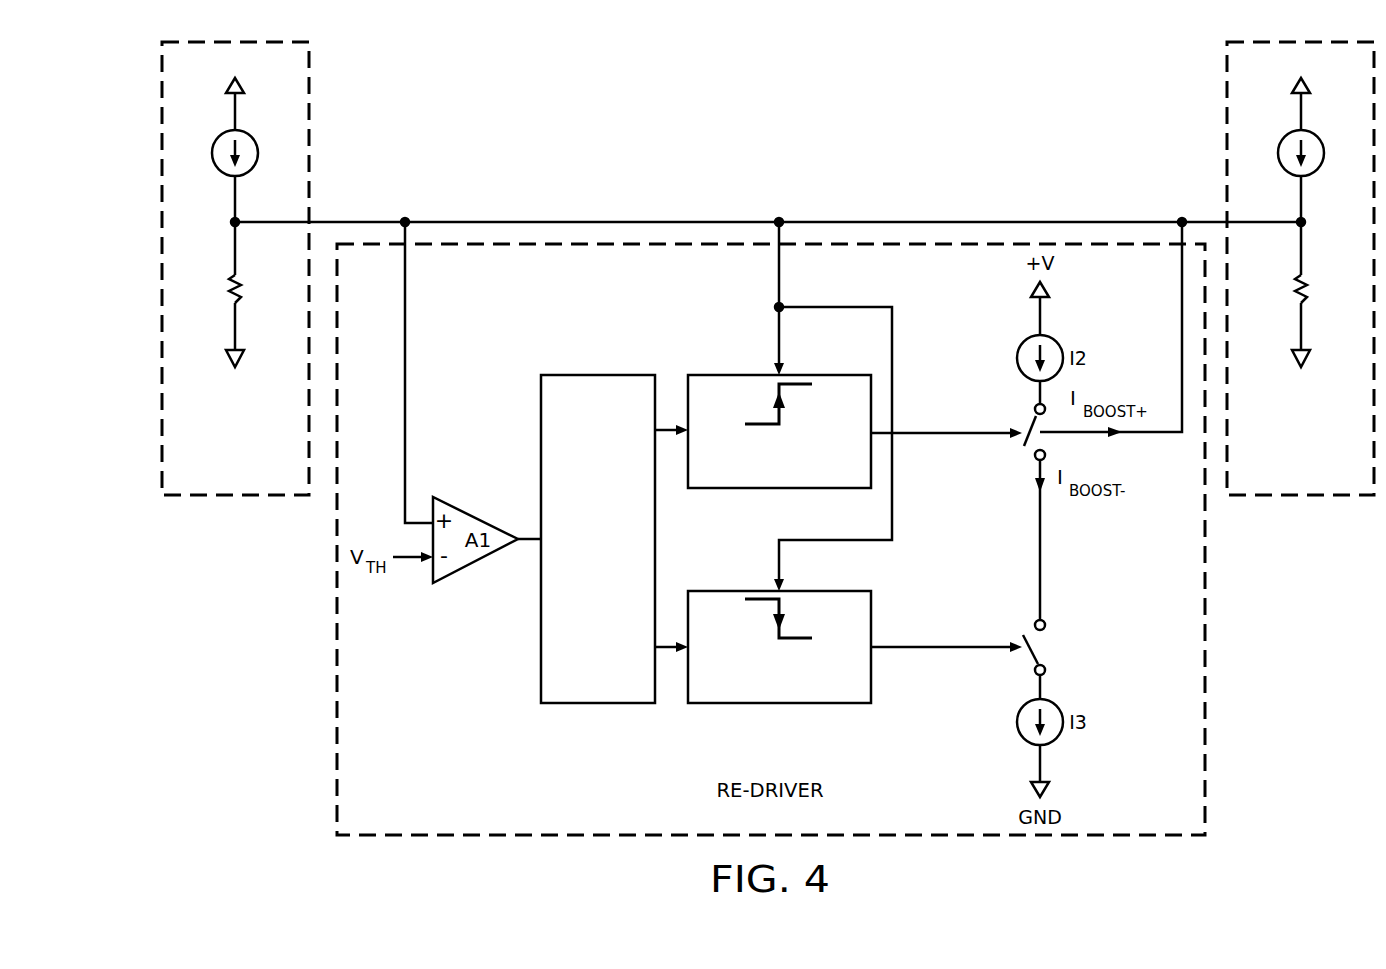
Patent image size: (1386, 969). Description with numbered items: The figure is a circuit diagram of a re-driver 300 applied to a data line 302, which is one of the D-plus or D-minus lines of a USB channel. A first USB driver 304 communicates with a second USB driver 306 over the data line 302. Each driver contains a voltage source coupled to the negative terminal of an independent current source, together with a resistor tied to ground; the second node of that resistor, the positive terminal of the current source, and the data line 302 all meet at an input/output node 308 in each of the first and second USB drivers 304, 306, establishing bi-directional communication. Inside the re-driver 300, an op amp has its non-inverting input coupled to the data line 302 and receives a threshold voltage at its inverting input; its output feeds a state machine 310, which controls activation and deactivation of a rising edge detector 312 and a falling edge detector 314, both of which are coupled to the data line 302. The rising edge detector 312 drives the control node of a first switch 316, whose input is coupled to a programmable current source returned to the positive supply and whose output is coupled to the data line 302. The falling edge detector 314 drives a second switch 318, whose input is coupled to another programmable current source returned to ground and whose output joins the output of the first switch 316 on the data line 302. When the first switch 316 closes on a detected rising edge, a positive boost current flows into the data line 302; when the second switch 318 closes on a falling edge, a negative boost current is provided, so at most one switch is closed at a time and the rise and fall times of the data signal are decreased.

The re-driver 300 is at (331, 611).
The data line 302 is at (910, 221).
The first USB driver 304 is at (315, 188).
The second USB driver 306 is at (1221, 188).
The input/output (I/O) node 308 is at (231, 220).
The state machine 310 is at (618, 589).
The rising edge detector 312 is at (750, 374).
The falling edge detector 314 is at (768, 704).
The first switch 316 is at (1032, 421).
The second switch 318 is at (1047, 648).